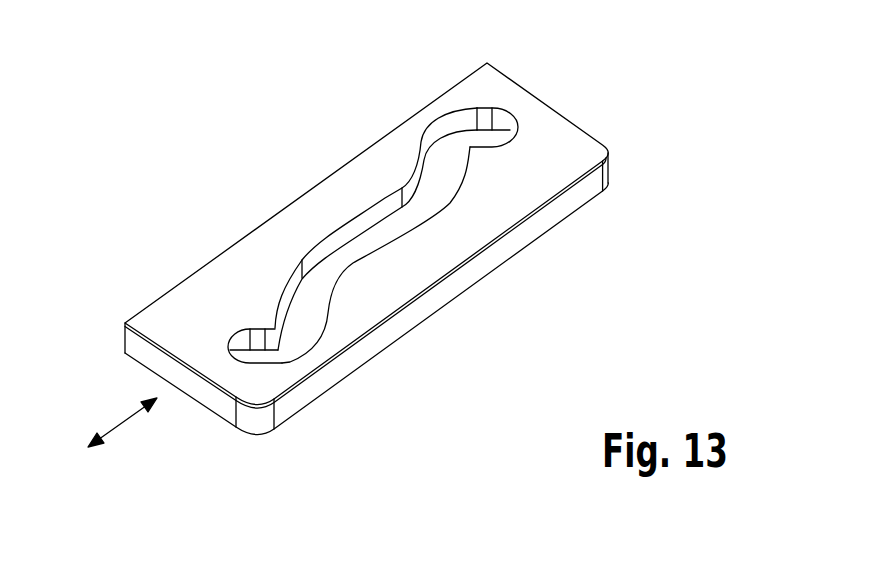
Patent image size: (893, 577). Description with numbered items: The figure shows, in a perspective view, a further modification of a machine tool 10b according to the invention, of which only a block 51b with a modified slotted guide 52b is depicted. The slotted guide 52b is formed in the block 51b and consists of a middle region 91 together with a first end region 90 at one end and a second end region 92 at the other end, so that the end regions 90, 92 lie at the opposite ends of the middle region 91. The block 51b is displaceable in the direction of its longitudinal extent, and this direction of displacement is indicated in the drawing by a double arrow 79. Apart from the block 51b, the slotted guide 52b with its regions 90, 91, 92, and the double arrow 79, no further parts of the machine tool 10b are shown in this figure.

The machine tool 10b is at (341, 254).
The block 51b is at (567, 142).
The slotted guide 52b is at (349, 254).
The first end region 90 is at (247, 359).
The middle region 91 is at (363, 243).
The second end region 92 is at (458, 122).
The double arrow 79 is at (120, 423).